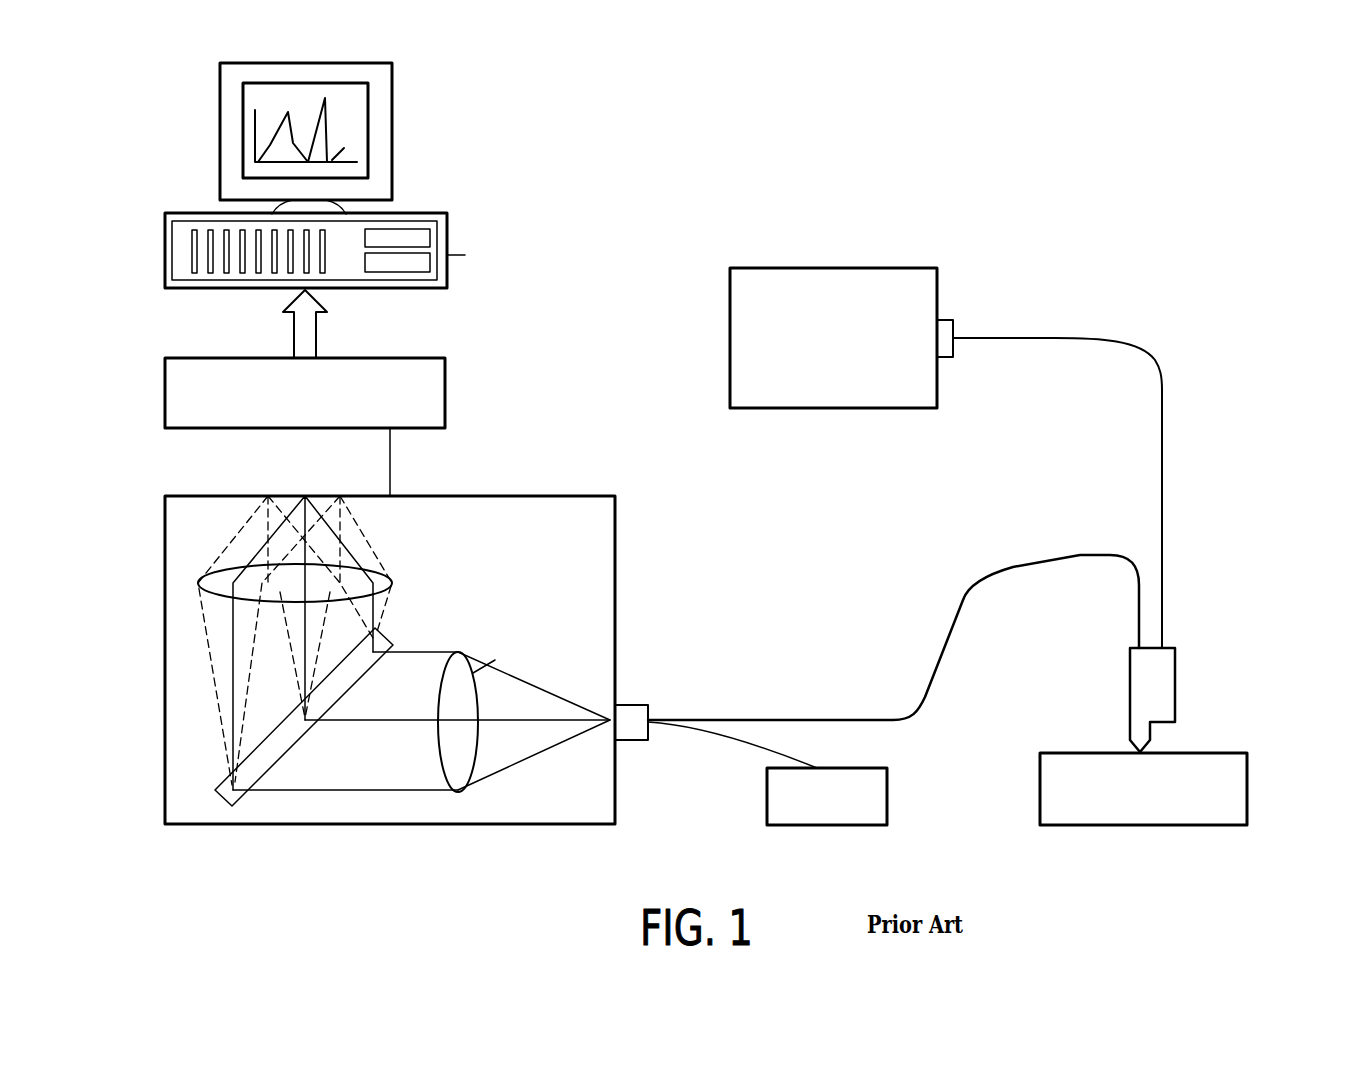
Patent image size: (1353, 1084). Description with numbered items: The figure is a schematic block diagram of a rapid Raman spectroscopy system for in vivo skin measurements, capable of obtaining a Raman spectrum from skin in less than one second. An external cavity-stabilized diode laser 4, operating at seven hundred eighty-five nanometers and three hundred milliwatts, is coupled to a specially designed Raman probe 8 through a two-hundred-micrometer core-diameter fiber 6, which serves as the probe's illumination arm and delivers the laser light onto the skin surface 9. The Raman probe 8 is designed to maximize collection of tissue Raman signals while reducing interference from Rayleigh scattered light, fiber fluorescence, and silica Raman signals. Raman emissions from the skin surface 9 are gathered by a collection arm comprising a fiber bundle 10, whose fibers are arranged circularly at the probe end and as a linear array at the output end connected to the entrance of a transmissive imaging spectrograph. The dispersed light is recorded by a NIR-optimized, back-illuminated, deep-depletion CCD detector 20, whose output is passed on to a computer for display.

The external cavity-stabilized diode laser 4 is at (822, 268).
The fiber 6 is at (1055, 338).
The Raman probe 8 is at (1175, 685).
The skin surface 9 is at (1247, 793).
The fiber bundle 10 is at (980, 583).
The CCD detector 20 is at (445, 395).